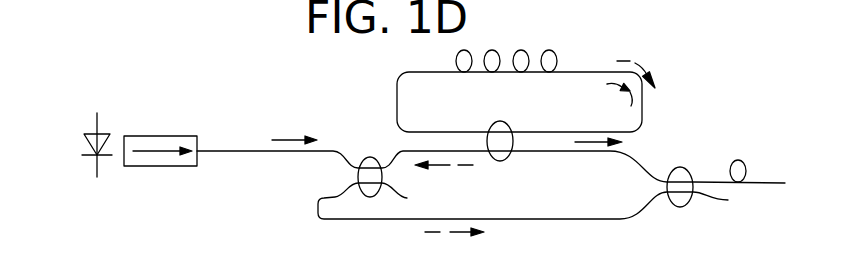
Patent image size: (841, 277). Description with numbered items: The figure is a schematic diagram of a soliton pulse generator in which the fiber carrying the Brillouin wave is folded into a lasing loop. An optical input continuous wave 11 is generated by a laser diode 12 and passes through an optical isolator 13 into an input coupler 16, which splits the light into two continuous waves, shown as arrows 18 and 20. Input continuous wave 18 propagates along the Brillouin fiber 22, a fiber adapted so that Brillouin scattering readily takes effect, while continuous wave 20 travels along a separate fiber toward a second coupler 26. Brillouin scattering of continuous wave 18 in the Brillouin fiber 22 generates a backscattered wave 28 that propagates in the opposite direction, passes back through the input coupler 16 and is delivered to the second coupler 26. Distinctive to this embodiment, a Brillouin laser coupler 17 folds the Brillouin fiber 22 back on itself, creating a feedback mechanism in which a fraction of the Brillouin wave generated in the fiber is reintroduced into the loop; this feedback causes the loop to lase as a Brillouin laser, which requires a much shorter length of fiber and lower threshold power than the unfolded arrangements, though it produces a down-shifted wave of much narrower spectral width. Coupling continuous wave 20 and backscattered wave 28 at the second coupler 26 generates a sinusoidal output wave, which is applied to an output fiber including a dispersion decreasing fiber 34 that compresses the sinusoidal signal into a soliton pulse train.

The optical input continuous wave 11 is at (278, 136).
The laser diode 12 is at (95, 124).
The optical isolator 13 is at (157, 135).
The input coupler 16 is at (358, 168).
The Brillouin laser coupler 17 is at (503, 161).
The input continuous wave 18 is at (631, 106).
The continuous wave 20 is at (592, 145).
The Brillouin fiber 22 is at (537, 74).
The second coupler 26 is at (682, 207).
The backscattered wave 28 is at (449, 165).
The dispersion decreasing fiber 34 is at (747, 158).